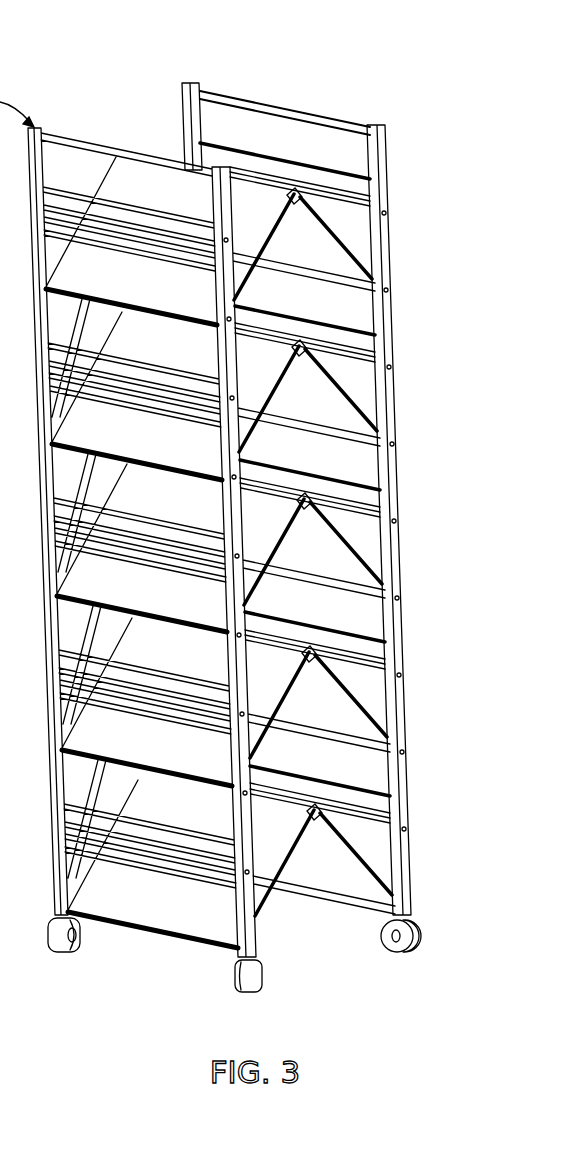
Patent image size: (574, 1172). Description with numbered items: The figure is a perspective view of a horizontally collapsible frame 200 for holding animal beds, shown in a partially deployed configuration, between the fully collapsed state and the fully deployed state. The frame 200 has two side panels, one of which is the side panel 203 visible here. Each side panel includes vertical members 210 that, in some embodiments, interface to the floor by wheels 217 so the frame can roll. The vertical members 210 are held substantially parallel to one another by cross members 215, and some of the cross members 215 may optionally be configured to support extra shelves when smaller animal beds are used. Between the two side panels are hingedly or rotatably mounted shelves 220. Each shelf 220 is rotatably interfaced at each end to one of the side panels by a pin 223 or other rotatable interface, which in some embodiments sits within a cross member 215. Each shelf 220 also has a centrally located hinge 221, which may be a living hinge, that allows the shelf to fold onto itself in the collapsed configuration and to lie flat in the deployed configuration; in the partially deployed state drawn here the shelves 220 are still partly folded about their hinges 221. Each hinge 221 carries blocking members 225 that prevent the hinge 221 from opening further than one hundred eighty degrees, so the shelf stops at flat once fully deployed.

The horizontally collapsible frame 200 is at (378, 75).
The side panel 203 is at (185, 80).
The vertical member 210 is at (384, 154).
The cross member 215 is at (337, 330).
The wheel 217 is at (396, 954).
The shelf 220 is at (350, 237).
The hinge 221 is at (300, 191).
The pin 223 is at (232, 319).
The blocking member 225 is at (283, 100).